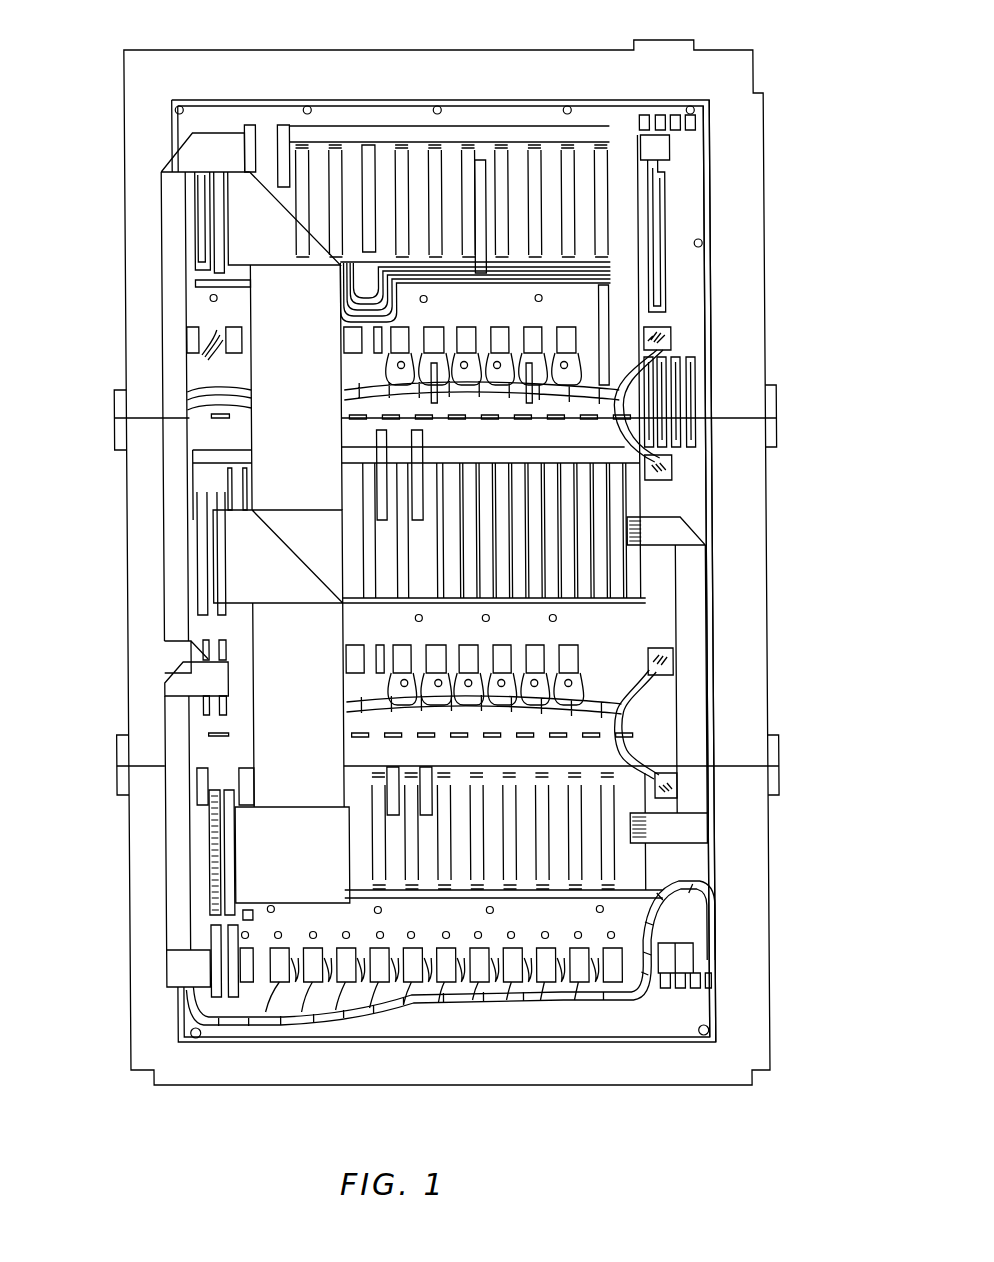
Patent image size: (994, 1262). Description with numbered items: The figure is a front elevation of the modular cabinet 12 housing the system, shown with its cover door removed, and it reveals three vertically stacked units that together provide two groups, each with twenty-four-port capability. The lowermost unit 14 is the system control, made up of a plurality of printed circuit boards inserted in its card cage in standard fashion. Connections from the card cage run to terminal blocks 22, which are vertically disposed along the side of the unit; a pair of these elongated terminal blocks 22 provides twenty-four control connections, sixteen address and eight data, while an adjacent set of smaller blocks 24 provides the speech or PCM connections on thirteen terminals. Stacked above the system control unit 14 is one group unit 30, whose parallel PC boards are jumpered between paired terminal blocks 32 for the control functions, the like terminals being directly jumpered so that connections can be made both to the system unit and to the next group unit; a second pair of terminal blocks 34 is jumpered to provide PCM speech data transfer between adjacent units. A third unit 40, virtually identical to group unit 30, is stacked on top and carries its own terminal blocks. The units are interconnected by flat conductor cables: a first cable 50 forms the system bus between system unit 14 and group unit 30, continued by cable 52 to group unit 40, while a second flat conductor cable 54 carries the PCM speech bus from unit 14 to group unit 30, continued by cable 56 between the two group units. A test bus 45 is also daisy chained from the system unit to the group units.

The cabinet 12 is at (752, 73).
The lowermost unit 14 is at (718, 866).
The terminal blocks 22 is at (228, 855).
The smaller blocks 24 is at (252, 125).
The group unit 30 is at (712, 503).
The paired terminal blocks 32 is at (222, 492).
The second pair of terminal blocks 34 is at (200, 727).
The third unit 40 is at (713, 227).
The test bus 45 is at (690, 593).
The first cable 50 is at (265, 628).
The cable 52 is at (275, 308).
The second flat conductor cable 54 is at (178, 815).
The cable 56 is at (170, 197).